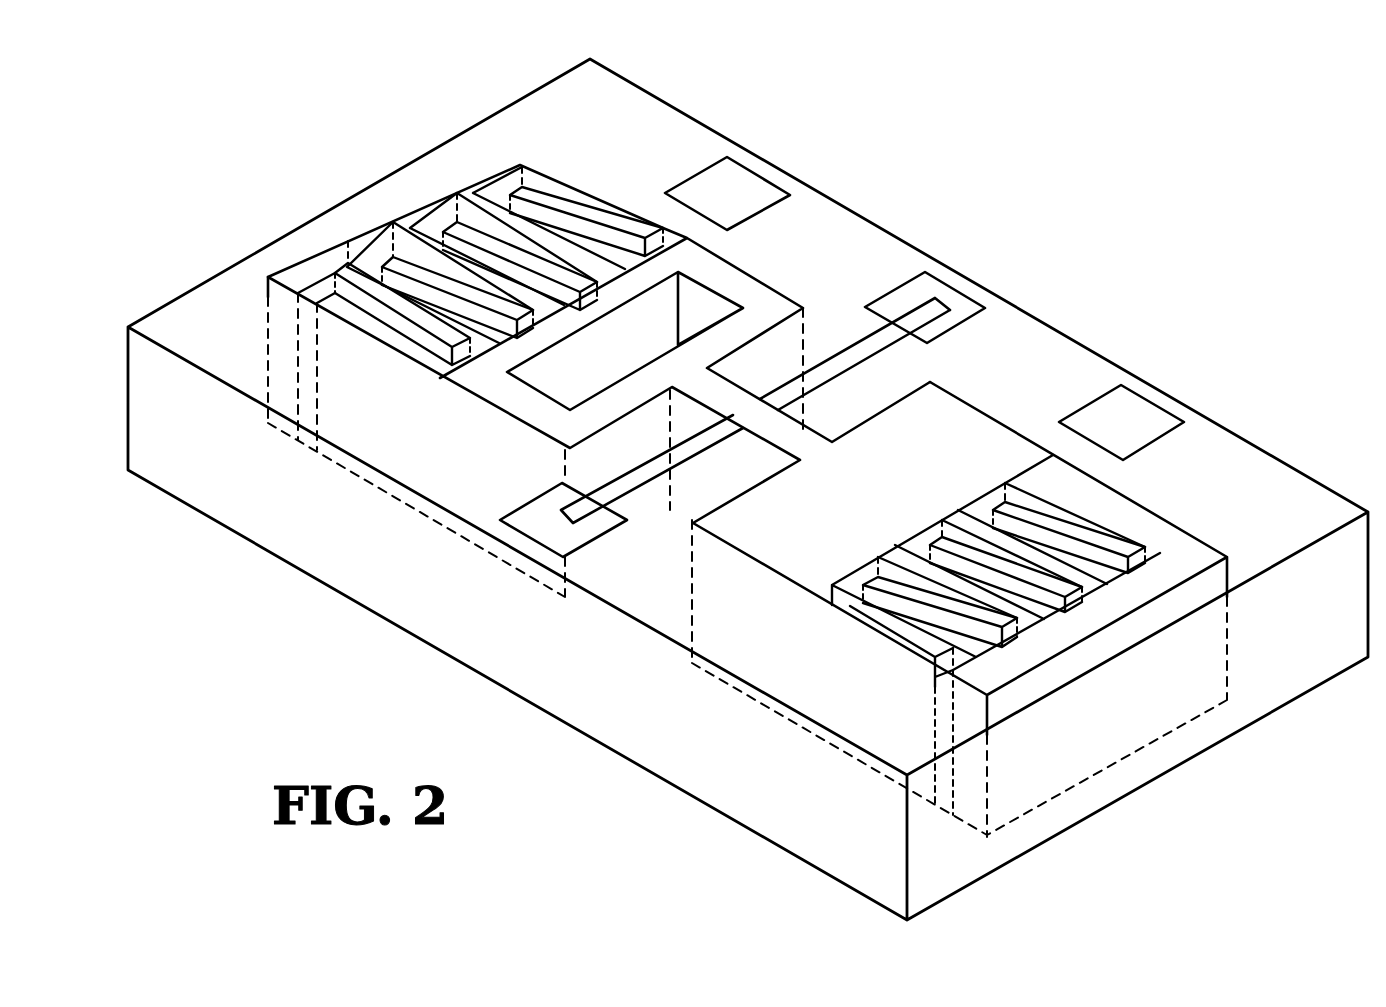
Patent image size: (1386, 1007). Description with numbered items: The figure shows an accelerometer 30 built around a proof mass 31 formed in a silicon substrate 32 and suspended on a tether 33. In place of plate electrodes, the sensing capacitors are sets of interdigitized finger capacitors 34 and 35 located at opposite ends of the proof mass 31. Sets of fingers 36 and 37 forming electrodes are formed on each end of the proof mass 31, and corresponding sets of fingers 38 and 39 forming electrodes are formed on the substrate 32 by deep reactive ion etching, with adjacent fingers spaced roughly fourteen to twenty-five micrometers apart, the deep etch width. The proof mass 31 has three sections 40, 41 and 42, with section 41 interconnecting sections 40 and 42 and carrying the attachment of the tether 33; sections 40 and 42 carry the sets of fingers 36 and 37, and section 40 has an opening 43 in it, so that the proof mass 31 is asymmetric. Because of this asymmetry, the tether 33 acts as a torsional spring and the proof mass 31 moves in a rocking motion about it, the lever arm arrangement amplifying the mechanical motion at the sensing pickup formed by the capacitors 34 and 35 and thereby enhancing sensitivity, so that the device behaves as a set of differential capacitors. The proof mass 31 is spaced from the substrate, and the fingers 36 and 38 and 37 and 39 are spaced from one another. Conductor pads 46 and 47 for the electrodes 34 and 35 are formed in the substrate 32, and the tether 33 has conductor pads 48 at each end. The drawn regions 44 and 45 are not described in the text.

The accelerometer 30 is at (842, 177).
The proof mass 31 is at (344, 477).
The silicon substrate 32 is at (1024, 379).
The tether 33 is at (838, 358).
The interdigitized finger capacitor 34 is at (619, 173).
The interdigitized finger capacitor 35 is at (1235, 409).
The fingers 36 is at (275, 272).
The fingers 37 is at (1005, 507).
The fingers 38 is at (347, 277).
The fingers 39 is at (1070, 575).
The section 40 is at (457, 453).
The section 41 is at (693, 497).
The section 42 is at (745, 625).
The opening 43 is at (705, 302).
The first mesa 44 is at (397, 212).
The second mesa 45 is at (1200, 560).
The conductor pad 46 is at (740, 190).
The conductor pad 47 is at (1138, 415).
The conductor pads 48 is at (975, 296).